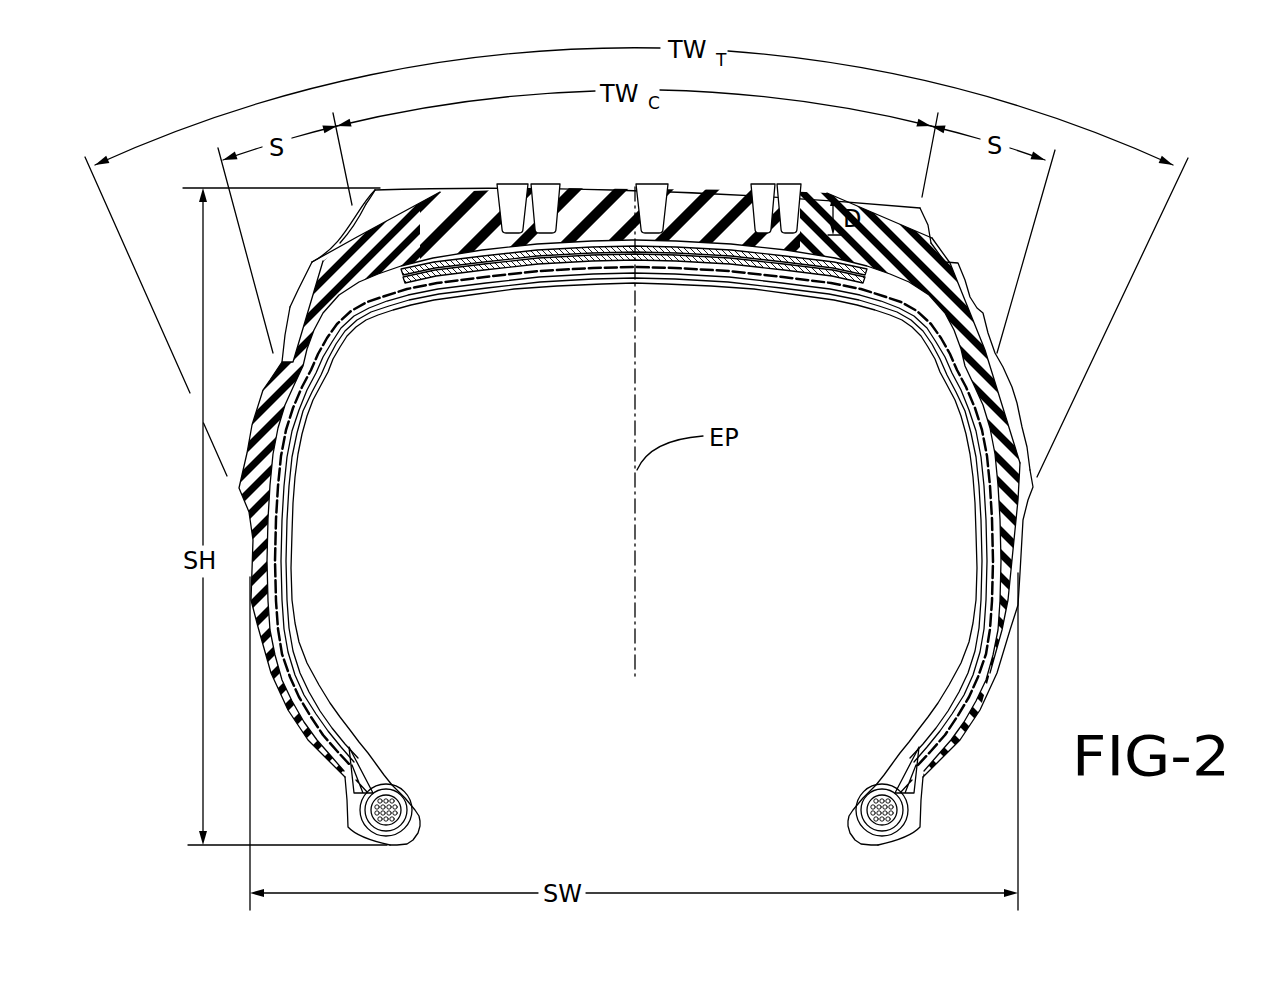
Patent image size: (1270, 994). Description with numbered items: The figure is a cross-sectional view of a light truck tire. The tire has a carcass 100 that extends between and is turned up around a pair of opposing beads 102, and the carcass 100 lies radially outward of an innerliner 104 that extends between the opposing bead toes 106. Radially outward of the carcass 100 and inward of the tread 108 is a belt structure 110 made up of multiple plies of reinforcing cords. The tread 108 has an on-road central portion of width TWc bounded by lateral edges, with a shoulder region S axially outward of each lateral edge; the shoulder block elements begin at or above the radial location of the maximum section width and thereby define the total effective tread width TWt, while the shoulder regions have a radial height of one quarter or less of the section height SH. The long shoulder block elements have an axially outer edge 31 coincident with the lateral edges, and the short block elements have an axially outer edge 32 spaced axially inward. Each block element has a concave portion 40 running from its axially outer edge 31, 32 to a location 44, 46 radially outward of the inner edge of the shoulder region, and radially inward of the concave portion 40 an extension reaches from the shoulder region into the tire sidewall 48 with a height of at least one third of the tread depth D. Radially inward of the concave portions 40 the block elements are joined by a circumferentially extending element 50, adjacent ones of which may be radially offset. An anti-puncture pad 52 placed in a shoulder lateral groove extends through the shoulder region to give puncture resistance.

The axially outer edge 31 is at (352, 213).
The axially outer edge 32 is at (360, 236).
The concave portion 40 is at (357, 237).
The location 44 is at (290, 305).
The location 46 is at (312, 263).
The tire sidewall 48 is at (1010, 512).
The circumferentially extending element 50 is at (263, 423).
The anti-puncture pad 52 is at (1000, 405).
The carcass 100 is at (997, 510).
The bead 102 is at (870, 808).
The innerliner 104 is at (967, 421).
The bead toe 106 is at (392, 845).
The tread 108 is at (682, 199).
The belt structure 110 is at (567, 253).